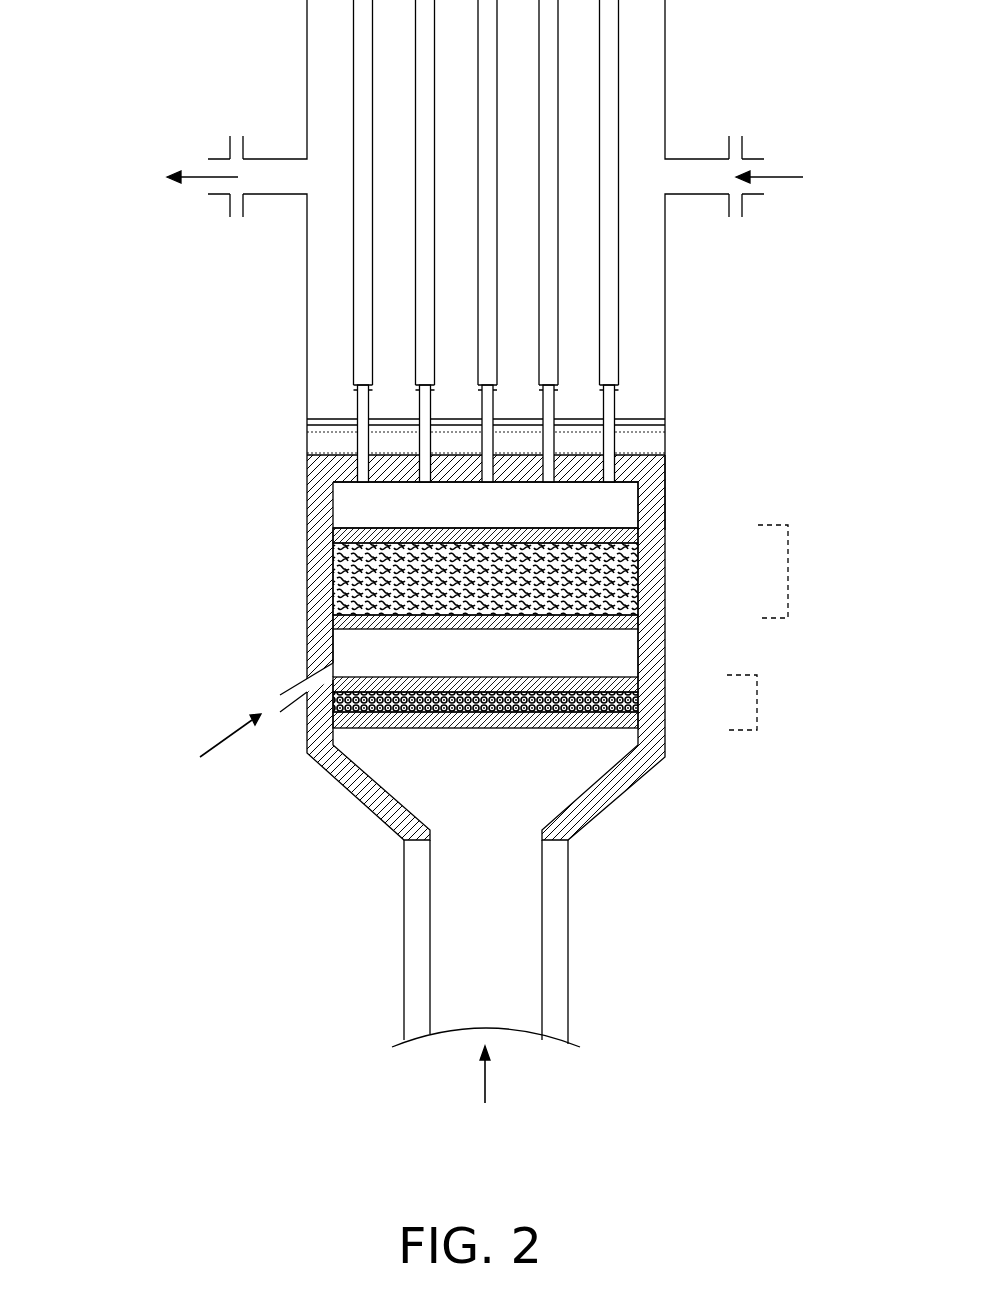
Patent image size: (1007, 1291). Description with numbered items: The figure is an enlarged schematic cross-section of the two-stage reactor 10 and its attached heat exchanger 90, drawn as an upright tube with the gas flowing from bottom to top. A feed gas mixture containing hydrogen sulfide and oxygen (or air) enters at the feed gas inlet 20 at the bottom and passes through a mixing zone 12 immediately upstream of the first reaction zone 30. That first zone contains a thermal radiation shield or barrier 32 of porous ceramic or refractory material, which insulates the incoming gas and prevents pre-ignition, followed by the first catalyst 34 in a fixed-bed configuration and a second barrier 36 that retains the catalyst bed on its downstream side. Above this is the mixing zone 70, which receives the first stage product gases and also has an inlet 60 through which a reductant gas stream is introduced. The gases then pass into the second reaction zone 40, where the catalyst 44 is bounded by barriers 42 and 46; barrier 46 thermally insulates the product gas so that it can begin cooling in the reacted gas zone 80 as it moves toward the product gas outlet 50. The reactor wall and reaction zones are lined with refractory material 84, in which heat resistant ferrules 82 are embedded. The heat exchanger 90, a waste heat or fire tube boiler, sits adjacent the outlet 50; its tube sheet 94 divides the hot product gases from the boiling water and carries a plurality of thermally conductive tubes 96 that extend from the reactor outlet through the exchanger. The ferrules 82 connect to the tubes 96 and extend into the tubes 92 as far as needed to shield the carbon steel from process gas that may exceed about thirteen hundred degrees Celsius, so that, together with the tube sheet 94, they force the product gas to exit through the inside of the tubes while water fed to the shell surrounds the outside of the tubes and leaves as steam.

The two-stage reactor 10 is at (560, 840).
The mixing zone 12 is at (378, 768).
The feed gas inlet 20 is at (508, 1037).
The first reaction zone 30 is at (757, 683).
The thermal radiation shield or barrier 32 is at (427, 720).
The first catalyst 34 is at (602, 715).
The second barrier 36 is at (637, 708).
The second reaction zone 40 is at (788, 565).
The barrier 42 is at (633, 615).
The catalyst 44 is at (623, 553).
The barrier 46 is at (647, 513).
The product gas outlet 50 is at (333, 481).
The inlet for a reductant gas stream 60 is at (307, 668).
The mixing zone 70 is at (603, 643).
The reacted gas zone 80 is at (350, 508).
The heat resistant ferrules 82 is at (612, 440).
The refractory material 84 is at (580, 470).
The heat exchanger 90 is at (307, 80).
The tubes 92 is at (445, 428).
The tube sheet 94 is at (328, 443).
The thermally conductive tubes 96 is at (363, 343).